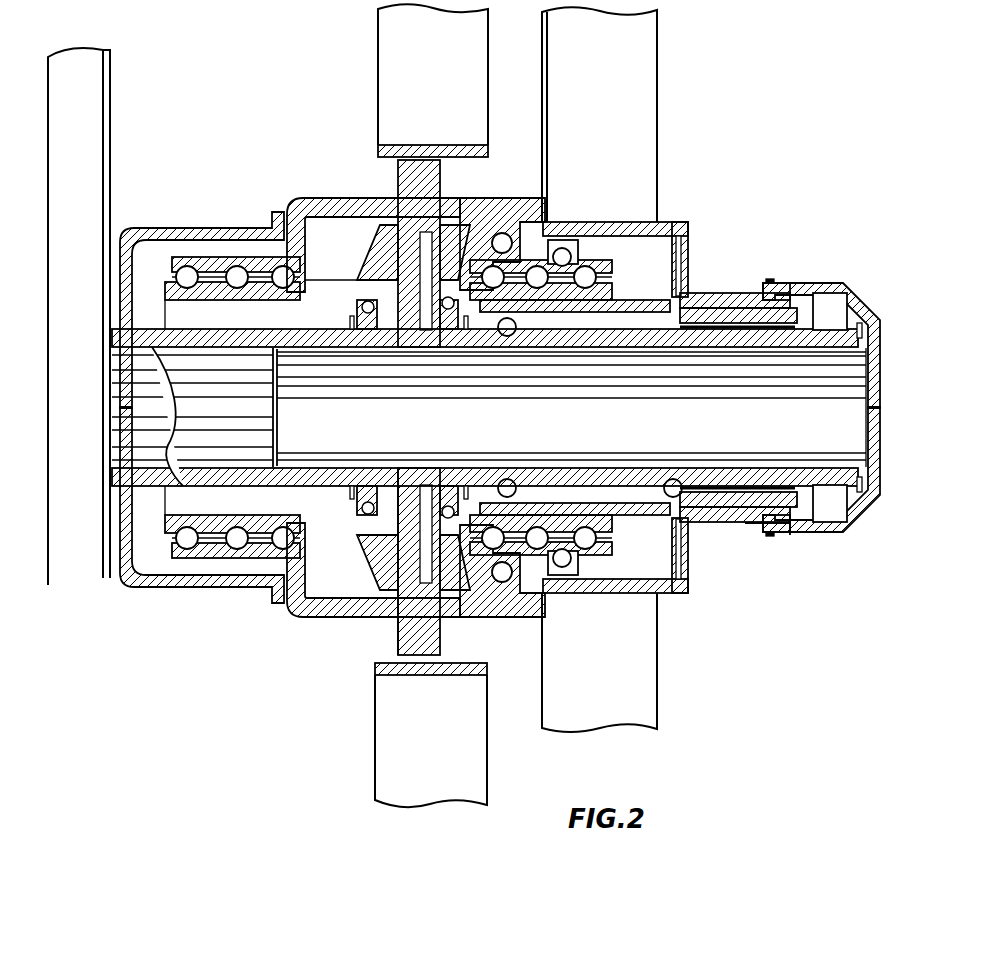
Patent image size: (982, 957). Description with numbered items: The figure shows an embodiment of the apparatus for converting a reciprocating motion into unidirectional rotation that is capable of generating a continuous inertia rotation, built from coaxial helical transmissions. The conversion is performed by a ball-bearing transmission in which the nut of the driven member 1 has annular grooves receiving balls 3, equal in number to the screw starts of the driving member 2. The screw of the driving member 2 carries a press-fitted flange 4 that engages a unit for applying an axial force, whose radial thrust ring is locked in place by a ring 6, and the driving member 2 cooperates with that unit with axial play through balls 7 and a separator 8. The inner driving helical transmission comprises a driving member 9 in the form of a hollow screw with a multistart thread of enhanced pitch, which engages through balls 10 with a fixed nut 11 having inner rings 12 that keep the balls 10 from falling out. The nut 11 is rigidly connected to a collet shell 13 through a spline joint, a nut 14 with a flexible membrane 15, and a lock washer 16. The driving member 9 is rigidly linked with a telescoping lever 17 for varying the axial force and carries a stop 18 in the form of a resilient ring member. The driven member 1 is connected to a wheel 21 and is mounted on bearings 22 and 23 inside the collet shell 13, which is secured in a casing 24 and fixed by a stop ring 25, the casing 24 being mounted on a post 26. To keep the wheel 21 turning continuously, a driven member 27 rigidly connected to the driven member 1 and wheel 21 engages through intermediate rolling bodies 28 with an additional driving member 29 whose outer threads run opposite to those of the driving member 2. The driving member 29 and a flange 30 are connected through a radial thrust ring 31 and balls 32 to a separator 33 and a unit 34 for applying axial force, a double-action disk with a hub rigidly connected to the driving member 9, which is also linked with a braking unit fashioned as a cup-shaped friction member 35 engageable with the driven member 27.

The driven member 1 is at (488, 627).
The driving member 2 is at (637, 520).
The balls 3 is at (580, 532).
The flange 4 is at (447, 250).
The ring 6 is at (449, 505).
The balls 7 is at (448, 318).
The separator 8 is at (396, 494).
The driving member 9 is at (808, 346).
The balls 10 is at (670, 482).
The fixed nut 11 is at (688, 332).
The inner rings 12 is at (790, 335).
The collet shell 13 is at (737, 293).
The nut 14 is at (793, 282).
The flexible membrane 15 is at (876, 418).
The lock washer 16 is at (764, 533).
The telescoping lever 17 is at (93, 106).
The stop 18 is at (857, 500).
The wheel 21 is at (390, 713).
The bearing 22 is at (503, 233).
The bearing 23 is at (562, 248).
The casing 24 is at (672, 228).
The stop ring 25 is at (690, 240).
The post 26 is at (643, 60).
The driven member 27 is at (333, 206).
The intermediate rolling bodies 28 is at (222, 260).
The driving member 29 is at (300, 524).
The flange 30 is at (370, 267).
The radial thrust ring 31 is at (362, 492).
The balls 32 is at (369, 503).
The separator 33 is at (360, 305).
The unit for applying axial force 34 is at (378, 620).
The cup-shaped friction member 35 is at (177, 592).